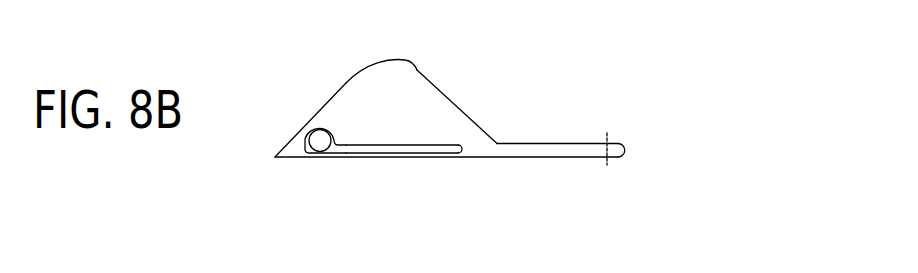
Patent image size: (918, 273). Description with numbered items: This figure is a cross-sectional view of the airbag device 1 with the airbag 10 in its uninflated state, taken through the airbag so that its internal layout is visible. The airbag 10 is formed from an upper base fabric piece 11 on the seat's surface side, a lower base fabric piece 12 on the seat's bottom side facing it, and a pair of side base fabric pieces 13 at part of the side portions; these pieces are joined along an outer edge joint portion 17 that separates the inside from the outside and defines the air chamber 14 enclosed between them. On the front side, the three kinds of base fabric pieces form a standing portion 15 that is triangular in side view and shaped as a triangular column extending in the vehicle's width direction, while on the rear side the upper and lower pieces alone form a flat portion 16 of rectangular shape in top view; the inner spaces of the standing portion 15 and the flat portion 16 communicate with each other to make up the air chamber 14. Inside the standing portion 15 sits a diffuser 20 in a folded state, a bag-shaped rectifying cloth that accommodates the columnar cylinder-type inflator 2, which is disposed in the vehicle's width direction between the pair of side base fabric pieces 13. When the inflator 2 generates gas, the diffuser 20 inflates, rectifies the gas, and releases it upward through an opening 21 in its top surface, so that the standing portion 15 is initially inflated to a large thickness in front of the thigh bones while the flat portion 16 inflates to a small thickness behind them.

The airbag device 1 is at (291, 91).
The inflator 2 is at (318, 140).
The airbag 10 is at (569, 136).
The upper base fabric piece 11 is at (440, 77).
The lower base fabric piece 12 is at (305, 157).
The side base fabric pieces 13 is at (353, 93).
The air chamber 14 is at (383, 87).
The standing portion 15 is at (387, 159).
The flat portion 16 is at (557, 161).
The outer edge joint portion 17 is at (624, 143).
The diffuser 20 is at (396, 145).
The opening 21 is at (436, 143).